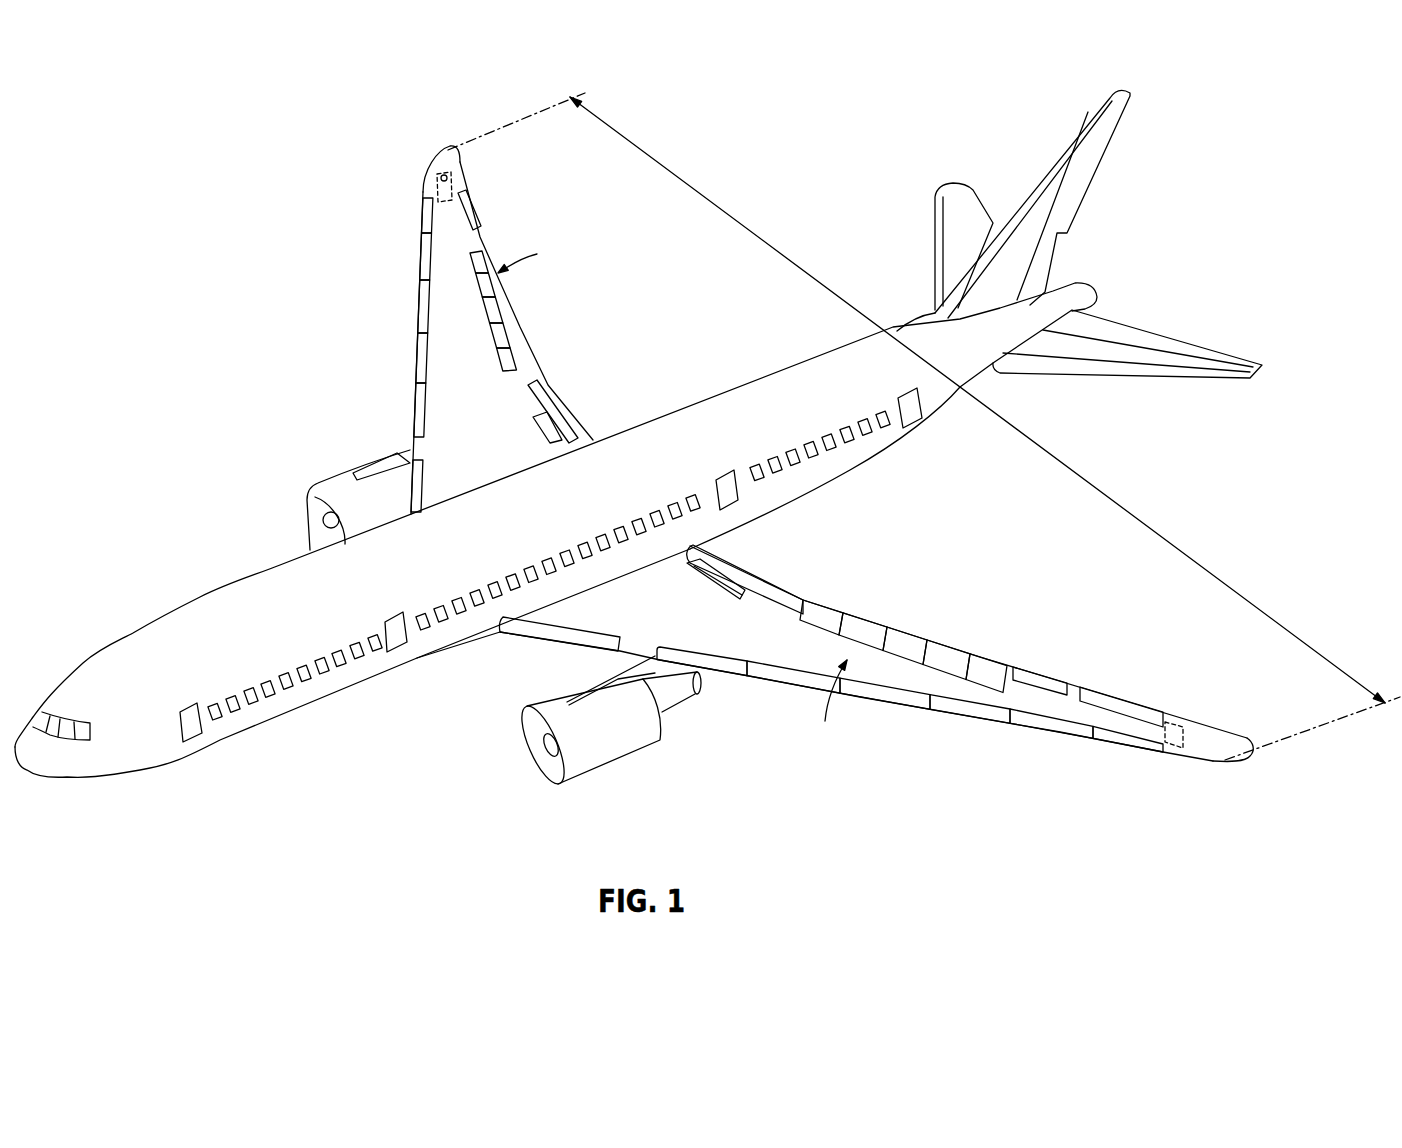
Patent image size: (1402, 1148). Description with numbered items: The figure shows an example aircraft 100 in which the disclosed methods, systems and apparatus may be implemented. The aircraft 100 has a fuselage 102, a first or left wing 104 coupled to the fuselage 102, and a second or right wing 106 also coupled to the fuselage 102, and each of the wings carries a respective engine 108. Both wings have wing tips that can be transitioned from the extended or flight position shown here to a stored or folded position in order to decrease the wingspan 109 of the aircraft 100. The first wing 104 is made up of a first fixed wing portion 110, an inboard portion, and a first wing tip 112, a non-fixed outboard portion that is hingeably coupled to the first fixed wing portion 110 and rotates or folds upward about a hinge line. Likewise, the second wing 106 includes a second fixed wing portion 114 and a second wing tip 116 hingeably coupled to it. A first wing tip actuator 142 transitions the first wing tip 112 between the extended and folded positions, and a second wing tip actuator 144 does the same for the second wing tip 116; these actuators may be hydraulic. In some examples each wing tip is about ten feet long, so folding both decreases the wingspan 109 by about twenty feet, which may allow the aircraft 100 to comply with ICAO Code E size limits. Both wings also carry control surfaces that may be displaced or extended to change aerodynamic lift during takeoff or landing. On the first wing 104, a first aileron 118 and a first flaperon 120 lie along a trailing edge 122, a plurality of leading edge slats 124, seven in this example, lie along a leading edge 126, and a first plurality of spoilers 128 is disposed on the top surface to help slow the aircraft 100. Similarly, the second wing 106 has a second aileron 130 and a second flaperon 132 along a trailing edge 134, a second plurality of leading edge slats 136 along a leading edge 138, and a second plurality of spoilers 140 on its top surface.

The aircraft 100 is at (152, 135).
The fuselage 102 is at (180, 603).
The first wing 104 is at (1023, 703).
The second wing 106 is at (474, 240).
The engine 108 is at (313, 503).
The wingspan 109 is at (782, 252).
The first fixed wing portion 110 is at (767, 607).
The first wing tip 112 is at (1210, 757).
The second fixed wing portion 114 is at (507, 390).
The second wing tip 116 is at (430, 176).
The first aileron 118 is at (1123, 707).
The first flaperon 120 is at (887, 627).
The trailing edge 122 is at (1077, 687).
The leading edge slats 124 is at (713, 663).
The leading edge 126 is at (800, 688).
The first plurality of spoilers 128 is at (829, 705).
The second aileron 130 is at (473, 206).
The second flaperon 132 is at (517, 334).
The trailing edge 134 is at (513, 305).
The second plurality of leading edge slats 136 is at (428, 219).
The leading edge 138 is at (420, 327).
The second plurality of spoilers 140 is at (541, 255).
The first wing tip actuator 142 is at (1173, 730).
The second wing tip actuator 144 is at (455, 181).